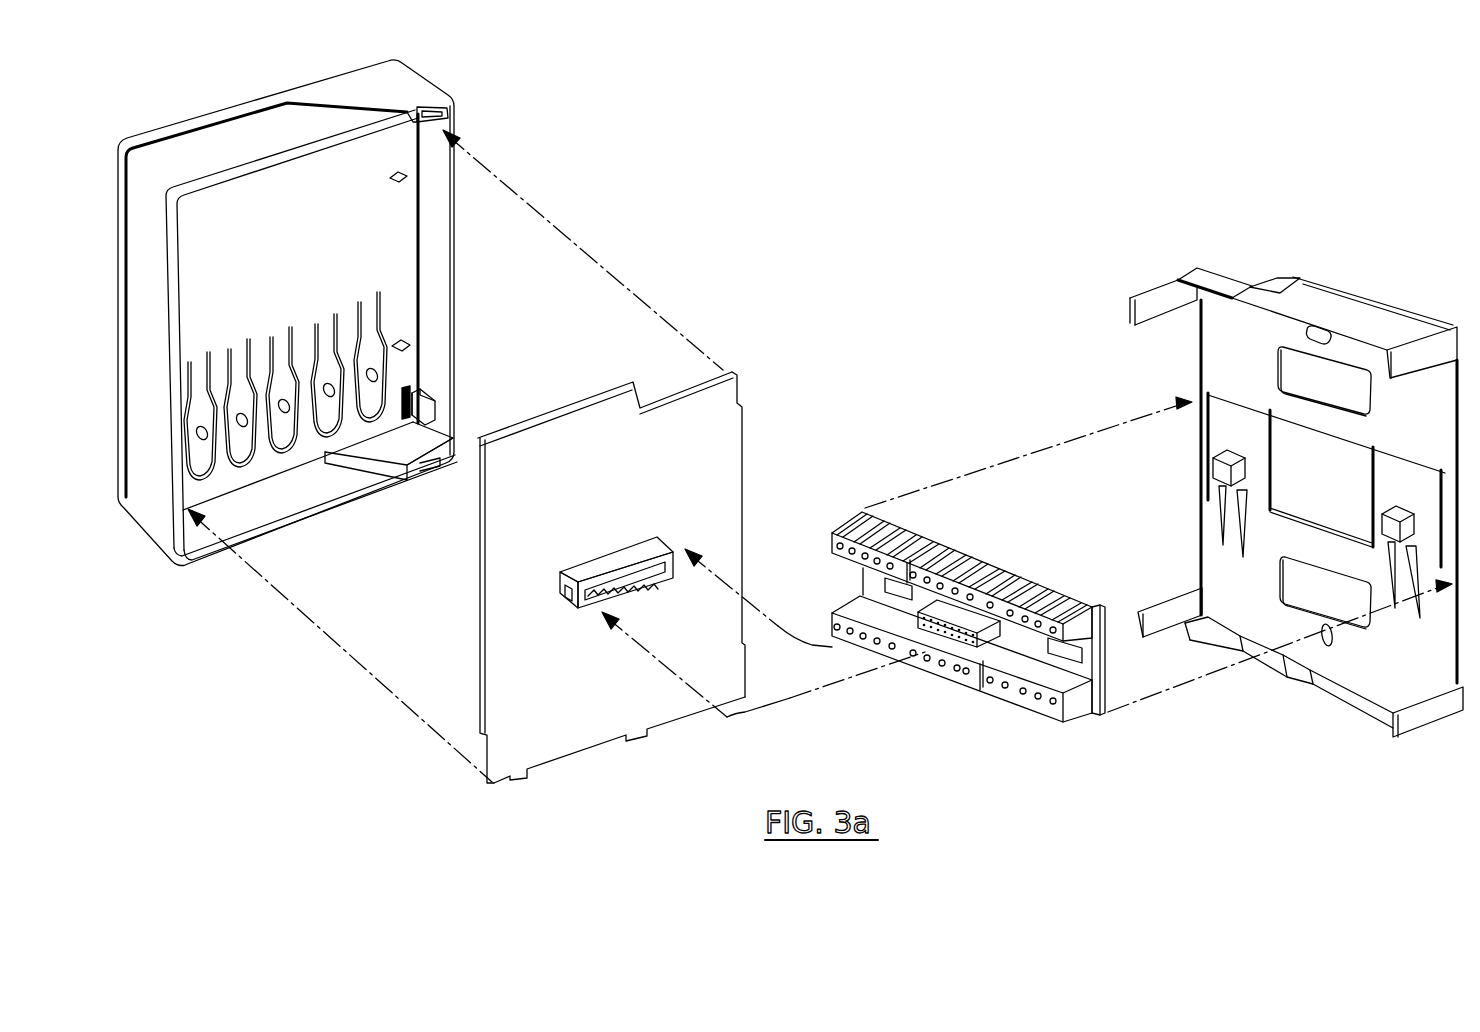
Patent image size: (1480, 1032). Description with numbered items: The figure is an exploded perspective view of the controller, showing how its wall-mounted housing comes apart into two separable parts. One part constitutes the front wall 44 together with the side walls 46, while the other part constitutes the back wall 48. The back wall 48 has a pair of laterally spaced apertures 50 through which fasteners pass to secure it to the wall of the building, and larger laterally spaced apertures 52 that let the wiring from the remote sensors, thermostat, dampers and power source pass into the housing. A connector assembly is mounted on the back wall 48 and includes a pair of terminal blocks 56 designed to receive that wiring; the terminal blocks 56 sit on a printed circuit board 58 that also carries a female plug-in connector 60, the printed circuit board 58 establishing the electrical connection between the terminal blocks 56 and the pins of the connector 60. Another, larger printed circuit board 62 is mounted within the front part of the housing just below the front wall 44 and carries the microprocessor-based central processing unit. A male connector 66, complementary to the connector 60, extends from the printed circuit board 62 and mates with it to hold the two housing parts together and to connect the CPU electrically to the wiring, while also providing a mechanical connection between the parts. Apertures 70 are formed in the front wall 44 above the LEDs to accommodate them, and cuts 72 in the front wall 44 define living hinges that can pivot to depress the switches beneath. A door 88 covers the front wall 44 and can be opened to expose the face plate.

The front wall 44 is at (321, 247).
The side walls 46 is at (212, 143).
The back wall 48 is at (1423, 652).
The apertures 50 is at (1318, 327).
The apertures 52 is at (1352, 380).
The terminal blocks 56 is at (1017, 600).
The printed circuit board 58 is at (1108, 663).
The female plug-in connector 60 is at (962, 610).
The printed circuit board 62 is at (567, 727).
The male connector 66 is at (630, 553).
The apertures 70 is at (373, 396).
The cuts 72 is at (373, 398).
The door 88 is at (420, 88).